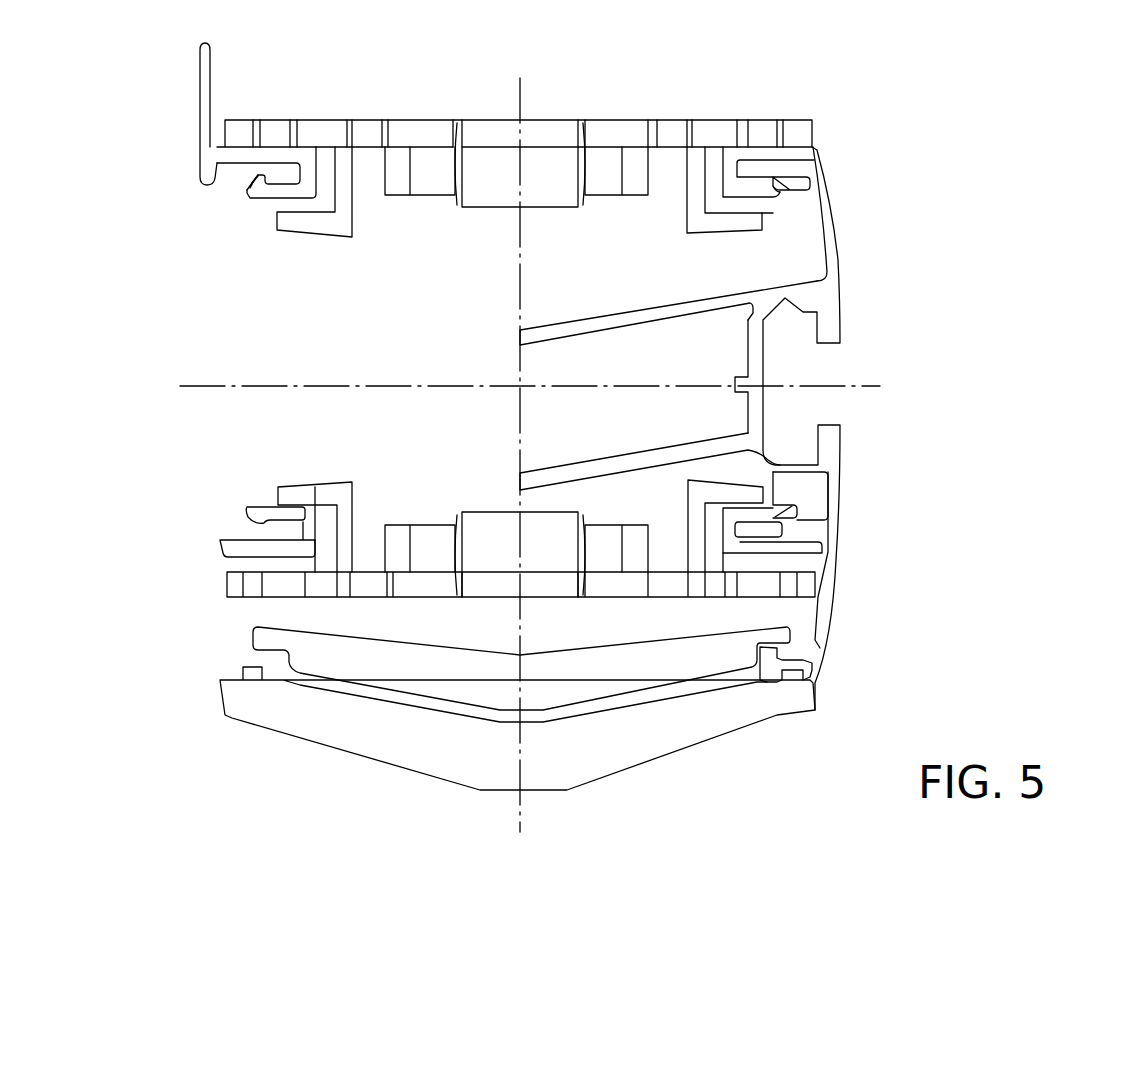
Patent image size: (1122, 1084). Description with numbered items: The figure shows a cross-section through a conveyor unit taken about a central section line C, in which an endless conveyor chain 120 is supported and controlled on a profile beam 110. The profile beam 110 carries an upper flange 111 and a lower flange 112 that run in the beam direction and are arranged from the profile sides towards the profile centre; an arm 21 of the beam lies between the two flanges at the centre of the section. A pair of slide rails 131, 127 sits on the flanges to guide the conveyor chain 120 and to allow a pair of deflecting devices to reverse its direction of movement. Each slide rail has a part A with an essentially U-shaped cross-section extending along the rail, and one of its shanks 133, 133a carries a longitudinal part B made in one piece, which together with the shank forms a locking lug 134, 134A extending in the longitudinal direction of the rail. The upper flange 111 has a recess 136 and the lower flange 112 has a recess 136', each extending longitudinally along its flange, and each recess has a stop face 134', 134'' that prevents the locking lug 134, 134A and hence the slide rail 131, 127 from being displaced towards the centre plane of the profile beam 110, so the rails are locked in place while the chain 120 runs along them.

The part with essentially U-shaped cross-section A is at (277, 144).
The longitudinal part B is at (270, 200).
The section line C is at (530, 463).
The arm 21 is at (740, 214).
The profile beam 110 is at (825, 296).
The upper flange 111 is at (767, 168).
The lower flange 112 is at (780, 530).
The conveyor chain 120 is at (545, 157).
The slide rail 127 is at (780, 547).
The slide rail 131 is at (810, 155).
The shank 133 is at (270, 205).
The shank 133a is at (225, 178).
The locking lug 134 is at (846, 224).
The stop face 134' is at (855, 201).
The stop face 134'' is at (860, 490).
The locking lug 134A is at (267, 177).
The recess 136 is at (852, 181).
The recess 136' is at (859, 511).